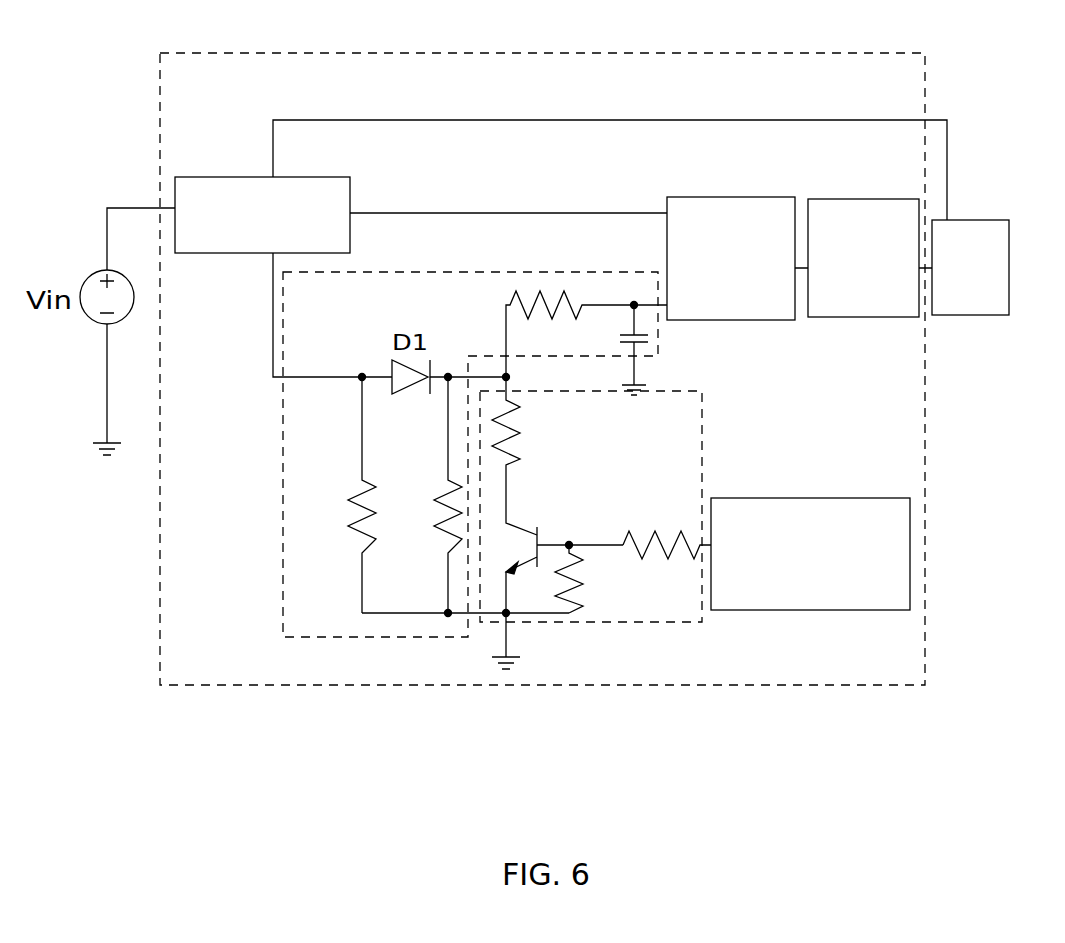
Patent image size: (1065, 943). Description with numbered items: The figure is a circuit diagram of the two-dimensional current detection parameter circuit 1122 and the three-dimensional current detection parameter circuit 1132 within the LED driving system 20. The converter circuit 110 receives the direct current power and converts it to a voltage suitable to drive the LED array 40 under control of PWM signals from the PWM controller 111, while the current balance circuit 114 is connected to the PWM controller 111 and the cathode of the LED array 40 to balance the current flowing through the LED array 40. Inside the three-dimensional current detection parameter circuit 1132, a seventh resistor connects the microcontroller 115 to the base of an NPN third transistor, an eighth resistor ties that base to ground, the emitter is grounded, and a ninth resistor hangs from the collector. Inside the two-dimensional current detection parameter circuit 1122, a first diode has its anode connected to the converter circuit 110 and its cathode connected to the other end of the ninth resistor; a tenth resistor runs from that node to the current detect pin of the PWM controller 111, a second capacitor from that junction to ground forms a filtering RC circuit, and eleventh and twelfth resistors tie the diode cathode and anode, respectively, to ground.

The LED driving system 20 is at (576, 52).
The converter circuit 110 is at (183, 177).
The PWM controller 111 is at (680, 197).
The current balance circuit 114 is at (832, 199).
The LED array 40 is at (952, 220).
The 2D current detection parameter circuit 1122 is at (394, 272).
The 3D current detection parameter circuit 1132 is at (662, 391).
The microcontroller 115 is at (780, 497).